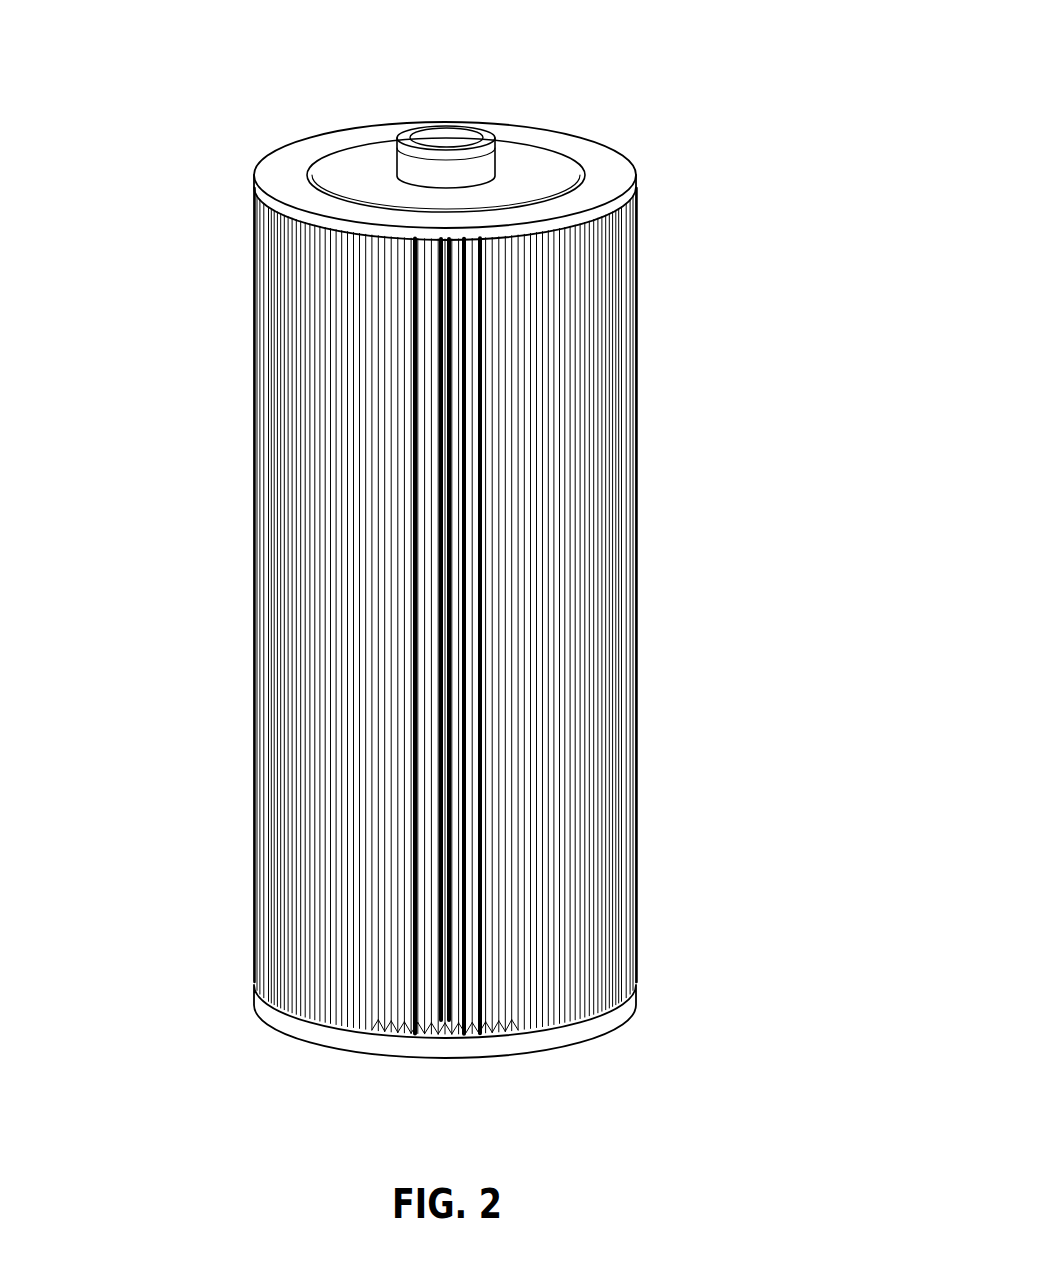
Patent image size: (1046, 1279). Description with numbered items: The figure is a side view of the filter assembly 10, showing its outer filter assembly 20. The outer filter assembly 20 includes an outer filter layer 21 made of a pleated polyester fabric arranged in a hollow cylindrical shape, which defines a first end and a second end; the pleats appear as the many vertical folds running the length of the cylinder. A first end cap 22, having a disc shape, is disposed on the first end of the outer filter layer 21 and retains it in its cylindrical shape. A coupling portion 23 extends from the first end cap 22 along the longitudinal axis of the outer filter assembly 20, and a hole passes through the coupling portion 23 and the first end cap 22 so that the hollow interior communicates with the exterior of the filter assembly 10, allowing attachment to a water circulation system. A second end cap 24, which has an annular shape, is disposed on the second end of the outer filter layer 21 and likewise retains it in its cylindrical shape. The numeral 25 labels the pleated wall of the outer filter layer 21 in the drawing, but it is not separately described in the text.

The filter assembly 10 is at (458, 566).
The outer filter assembly 20 is at (458, 566).
The outer filter layer 21 is at (470, 610).
The first end cap 22 is at (623, 172).
The coupling portion 23 is at (405, 147).
The second end cap 24 is at (523, 1052).
The pleats 25 is at (587, 507).